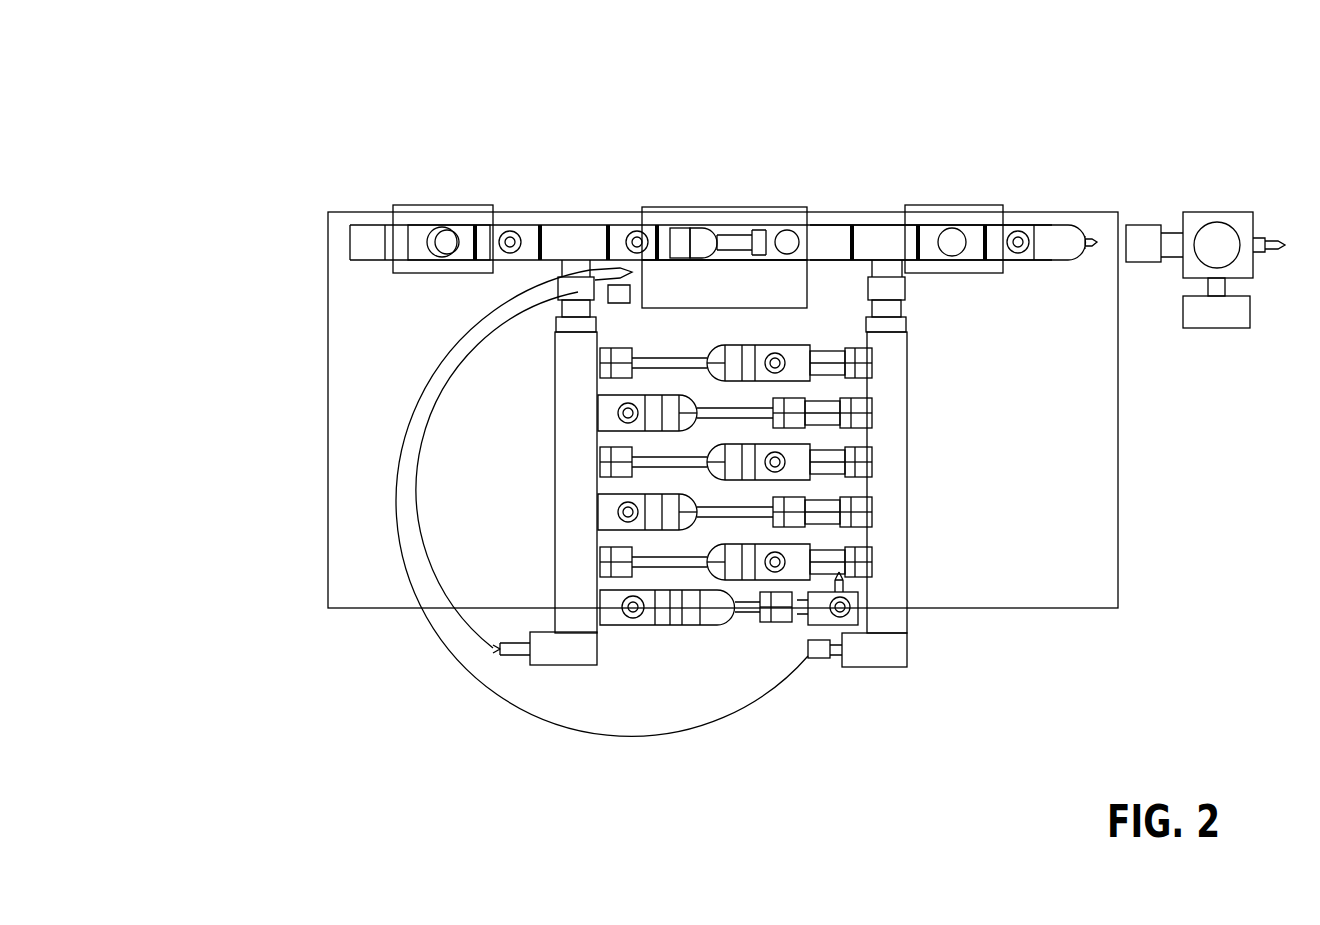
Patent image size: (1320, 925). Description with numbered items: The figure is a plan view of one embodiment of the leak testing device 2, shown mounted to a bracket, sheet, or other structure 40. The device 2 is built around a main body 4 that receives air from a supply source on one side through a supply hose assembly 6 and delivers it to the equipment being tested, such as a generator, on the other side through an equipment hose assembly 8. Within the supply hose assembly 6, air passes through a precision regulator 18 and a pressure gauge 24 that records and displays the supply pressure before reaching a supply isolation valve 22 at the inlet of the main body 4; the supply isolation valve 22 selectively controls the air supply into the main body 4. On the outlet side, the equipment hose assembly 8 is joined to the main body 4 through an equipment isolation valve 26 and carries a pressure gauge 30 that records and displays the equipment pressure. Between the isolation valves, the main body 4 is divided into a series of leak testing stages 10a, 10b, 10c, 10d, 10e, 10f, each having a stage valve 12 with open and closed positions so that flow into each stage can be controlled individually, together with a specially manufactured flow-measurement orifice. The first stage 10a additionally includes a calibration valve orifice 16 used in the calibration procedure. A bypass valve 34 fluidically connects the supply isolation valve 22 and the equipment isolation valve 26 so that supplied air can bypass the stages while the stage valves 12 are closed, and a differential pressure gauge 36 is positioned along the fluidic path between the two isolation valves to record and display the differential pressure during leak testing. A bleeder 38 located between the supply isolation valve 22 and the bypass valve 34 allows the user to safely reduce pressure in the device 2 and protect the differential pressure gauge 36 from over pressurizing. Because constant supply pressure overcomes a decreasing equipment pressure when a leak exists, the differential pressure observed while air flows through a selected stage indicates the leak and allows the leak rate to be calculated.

The device 2 is at (226, 438).
The main body 4 is at (900, 765).
The supply hose assembly 6 is at (1285, 175).
The equipment hose assembly 8 is at (578, 175).
The first stage 10a is at (802, 203).
The second stage 10b is at (751, 363).
The third stage 10c is at (733, 423).
The fourth stage 10d is at (751, 462).
The fifth stage 10e is at (786, 521).
The sixth stage 10f is at (751, 562).
The stage valve 12 is at (600, 415).
The calibration valve orifice 16 is at (838, 233).
The regulator 18 is at (1213, 310).
The supply isolation valve 22 is at (1030, 275).
The pressure gauge 24 is at (957, 285).
The equipment isolation valve 26 is at (513, 230).
The pressure gauge 30 is at (414, 205).
The bypass valve 34 is at (637, 622).
The differential pressure gauge 36 is at (772, 207).
The bleeder 38 is at (850, 605).
The bracket, sheet, or other structure 40 is at (340, 584).